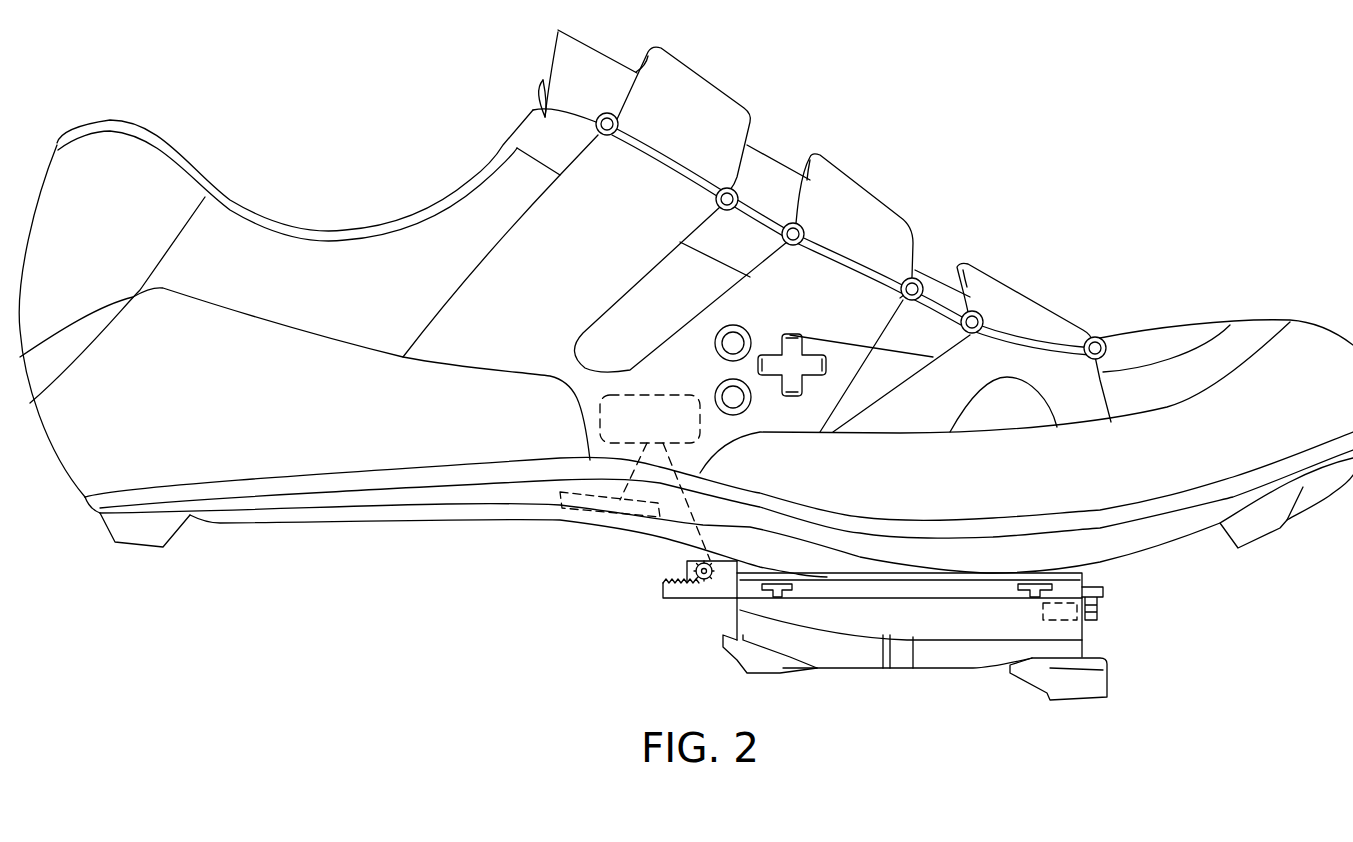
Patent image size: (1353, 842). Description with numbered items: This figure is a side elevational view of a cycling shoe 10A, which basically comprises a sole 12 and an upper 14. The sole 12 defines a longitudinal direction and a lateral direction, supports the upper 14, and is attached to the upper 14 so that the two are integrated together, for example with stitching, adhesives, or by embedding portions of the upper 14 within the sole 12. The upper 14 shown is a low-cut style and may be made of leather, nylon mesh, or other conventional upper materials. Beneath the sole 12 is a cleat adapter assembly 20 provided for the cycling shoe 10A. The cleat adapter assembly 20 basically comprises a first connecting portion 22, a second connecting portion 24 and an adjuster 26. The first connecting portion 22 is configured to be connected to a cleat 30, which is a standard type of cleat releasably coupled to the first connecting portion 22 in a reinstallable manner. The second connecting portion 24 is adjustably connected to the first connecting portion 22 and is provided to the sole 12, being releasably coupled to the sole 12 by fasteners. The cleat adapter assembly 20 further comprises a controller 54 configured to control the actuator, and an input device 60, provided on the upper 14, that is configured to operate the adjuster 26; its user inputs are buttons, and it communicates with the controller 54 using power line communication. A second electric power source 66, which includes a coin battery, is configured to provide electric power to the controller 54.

The cycling shoe 10A is at (1052, 150).
The sole 12 is at (1186, 540).
The upper 14 is at (1145, 332).
The cleat adapter assembly 20 is at (1120, 605).
The first connecting portion 22 is at (840, 634).
The second connecting portion 24 is at (981, 602).
The adjuster 26 is at (718, 609).
The cleat 30 is at (937, 672).
The controller 54 is at (598, 406).
The input device 60 is at (809, 319).
The second electric power source 66 is at (578, 515).